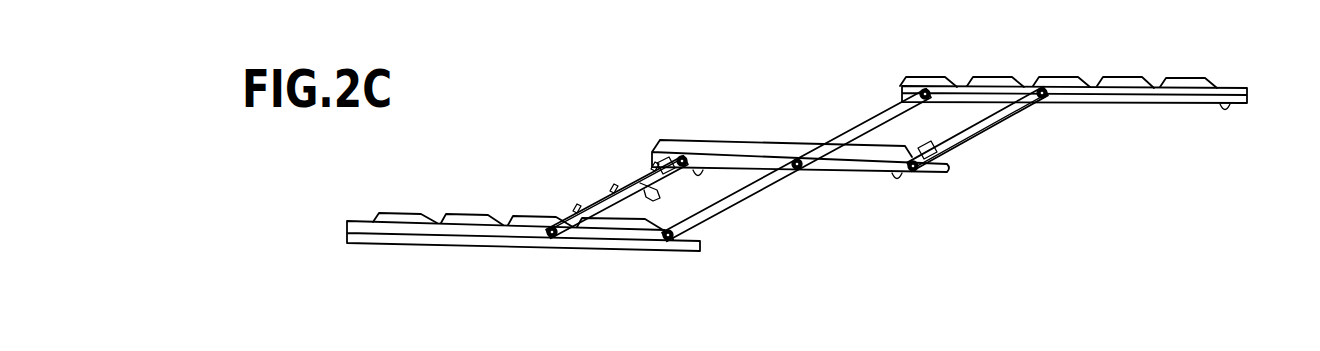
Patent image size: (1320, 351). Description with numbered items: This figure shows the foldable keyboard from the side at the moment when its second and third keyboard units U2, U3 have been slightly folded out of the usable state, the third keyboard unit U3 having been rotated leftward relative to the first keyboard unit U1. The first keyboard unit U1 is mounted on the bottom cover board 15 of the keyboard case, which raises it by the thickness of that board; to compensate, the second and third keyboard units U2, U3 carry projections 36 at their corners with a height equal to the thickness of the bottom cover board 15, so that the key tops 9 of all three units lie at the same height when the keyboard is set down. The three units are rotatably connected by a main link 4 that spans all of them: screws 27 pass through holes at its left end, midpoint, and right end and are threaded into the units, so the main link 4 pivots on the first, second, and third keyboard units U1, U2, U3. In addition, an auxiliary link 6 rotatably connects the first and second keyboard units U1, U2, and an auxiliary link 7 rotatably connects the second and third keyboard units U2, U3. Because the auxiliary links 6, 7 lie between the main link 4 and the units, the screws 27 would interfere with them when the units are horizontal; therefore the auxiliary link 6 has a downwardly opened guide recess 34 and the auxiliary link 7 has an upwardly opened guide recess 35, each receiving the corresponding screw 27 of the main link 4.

The first keyboard unit U1 is at (523, 214).
The second keyboard unit U2 is at (790, 141).
The third keyboard unit U3 is at (1073, 58).
The bottom cover board 15 is at (498, 247).
The key top 9 is at (1188, 77).
The main link 4 is at (843, 124).
The auxiliary link 6 is at (613, 190).
The auxiliary link 7 is at (983, 125).
The guide recess 34 is at (631, 172).
The guide recess 35 is at (931, 161).
The projection 36 is at (897, 182).
The screw 27 is at (549, 240).